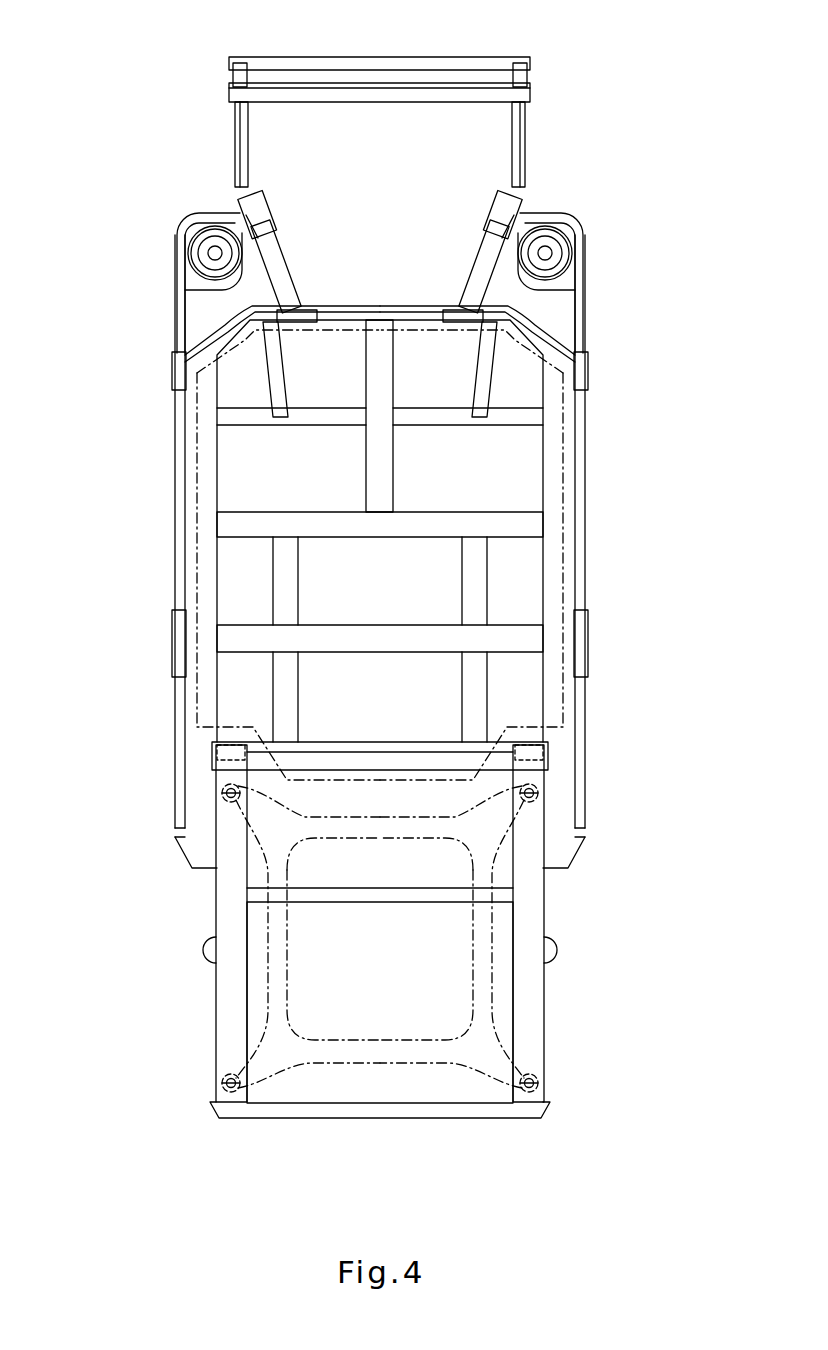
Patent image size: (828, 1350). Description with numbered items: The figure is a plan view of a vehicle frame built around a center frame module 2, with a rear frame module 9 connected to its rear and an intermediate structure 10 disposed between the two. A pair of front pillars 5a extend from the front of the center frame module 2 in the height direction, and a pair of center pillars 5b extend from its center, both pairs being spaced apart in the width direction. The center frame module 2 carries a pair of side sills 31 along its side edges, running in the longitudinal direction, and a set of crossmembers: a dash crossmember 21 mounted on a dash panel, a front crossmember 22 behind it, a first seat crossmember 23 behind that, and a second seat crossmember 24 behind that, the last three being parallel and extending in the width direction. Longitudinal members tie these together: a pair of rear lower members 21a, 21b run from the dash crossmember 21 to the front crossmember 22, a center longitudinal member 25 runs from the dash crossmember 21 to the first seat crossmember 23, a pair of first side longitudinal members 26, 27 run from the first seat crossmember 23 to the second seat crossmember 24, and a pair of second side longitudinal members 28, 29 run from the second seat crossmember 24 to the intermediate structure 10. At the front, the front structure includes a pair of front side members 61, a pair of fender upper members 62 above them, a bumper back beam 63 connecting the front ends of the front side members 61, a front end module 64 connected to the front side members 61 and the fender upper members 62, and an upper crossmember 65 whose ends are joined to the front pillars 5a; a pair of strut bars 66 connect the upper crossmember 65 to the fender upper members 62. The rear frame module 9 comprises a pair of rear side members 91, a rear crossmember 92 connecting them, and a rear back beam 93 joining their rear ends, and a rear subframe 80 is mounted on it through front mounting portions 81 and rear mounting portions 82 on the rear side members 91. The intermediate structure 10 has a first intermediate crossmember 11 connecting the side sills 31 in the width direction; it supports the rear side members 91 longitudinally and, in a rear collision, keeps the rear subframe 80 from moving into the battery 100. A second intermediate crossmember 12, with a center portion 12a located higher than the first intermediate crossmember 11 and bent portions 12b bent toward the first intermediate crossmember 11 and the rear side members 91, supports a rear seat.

The center frame module 2 is at (142, 470).
The front pillars 5a is at (178, 368).
The center pillars 5b is at (178, 640).
The rear frame module 9 is at (205, 1003).
The intermediate structure 10 is at (366, 735).
The first intermediate crossmember 11 is at (320, 742).
The second intermediate crossmember 12 is at (414, 790).
The center portion 12a is at (383, 786).
The bent portions 12b is at (285, 777).
The dash crossmember 21 is at (347, 306).
The rear lower member 21a is at (282, 378).
The rear lower member 21b is at (478, 378).
The front crossmember 22 is at (303, 425).
The first seat crossmember 23 is at (338, 524).
The second seat crossmember 24 is at (377, 638).
The center longitudinal member 25 is at (395, 467).
The first side longitudinal member 26 is at (290, 582).
The first side longitudinal member 27 is at (467, 582).
The second side longitudinal member 28 is at (290, 682).
The second side longitudinal member 29 is at (467, 682).
The side sill 31 is at (172, 548).
The front side members 61 is at (238, 155).
The fender upper members 62 is at (170, 255).
The bumper back beam 63 is at (381, 57).
The front end module 64 is at (383, 110).
The upper crossmember 65 is at (333, 322).
The strut bars 66 is at (273, 267).
The rear subframe 80 is at (493, 967).
The front mounting portions 81 is at (224, 794).
The rear mounting portions 82 is at (222, 1083).
The rear side members 91 is at (232, 916).
The rear crossmember 92 is at (383, 902).
The rear back beam 93 is at (382, 1118).
The battery 100 is at (195, 690).